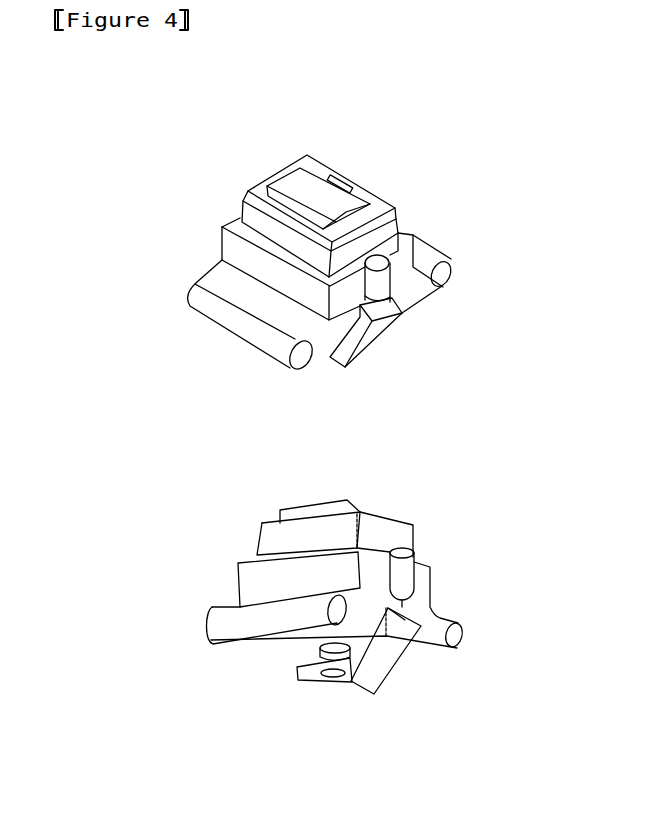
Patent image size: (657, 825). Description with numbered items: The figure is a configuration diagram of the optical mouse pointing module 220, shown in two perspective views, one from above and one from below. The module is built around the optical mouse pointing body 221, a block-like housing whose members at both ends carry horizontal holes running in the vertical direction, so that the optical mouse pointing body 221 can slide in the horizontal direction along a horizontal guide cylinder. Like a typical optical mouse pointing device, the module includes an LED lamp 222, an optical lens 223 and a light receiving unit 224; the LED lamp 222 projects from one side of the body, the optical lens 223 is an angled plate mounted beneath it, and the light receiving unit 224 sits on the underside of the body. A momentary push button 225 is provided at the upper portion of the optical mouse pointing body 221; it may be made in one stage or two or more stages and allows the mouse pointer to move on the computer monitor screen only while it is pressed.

The optical mouse pointing module 220 is at (140, 115).
The optical mouse pointing body 221 is at (427, 248).
The LED lamp 222 is at (380, 280).
The optical lens 223 is at (385, 318).
The light receiving unit 224 is at (326, 648).
The momentary push button 225 is at (357, 199).